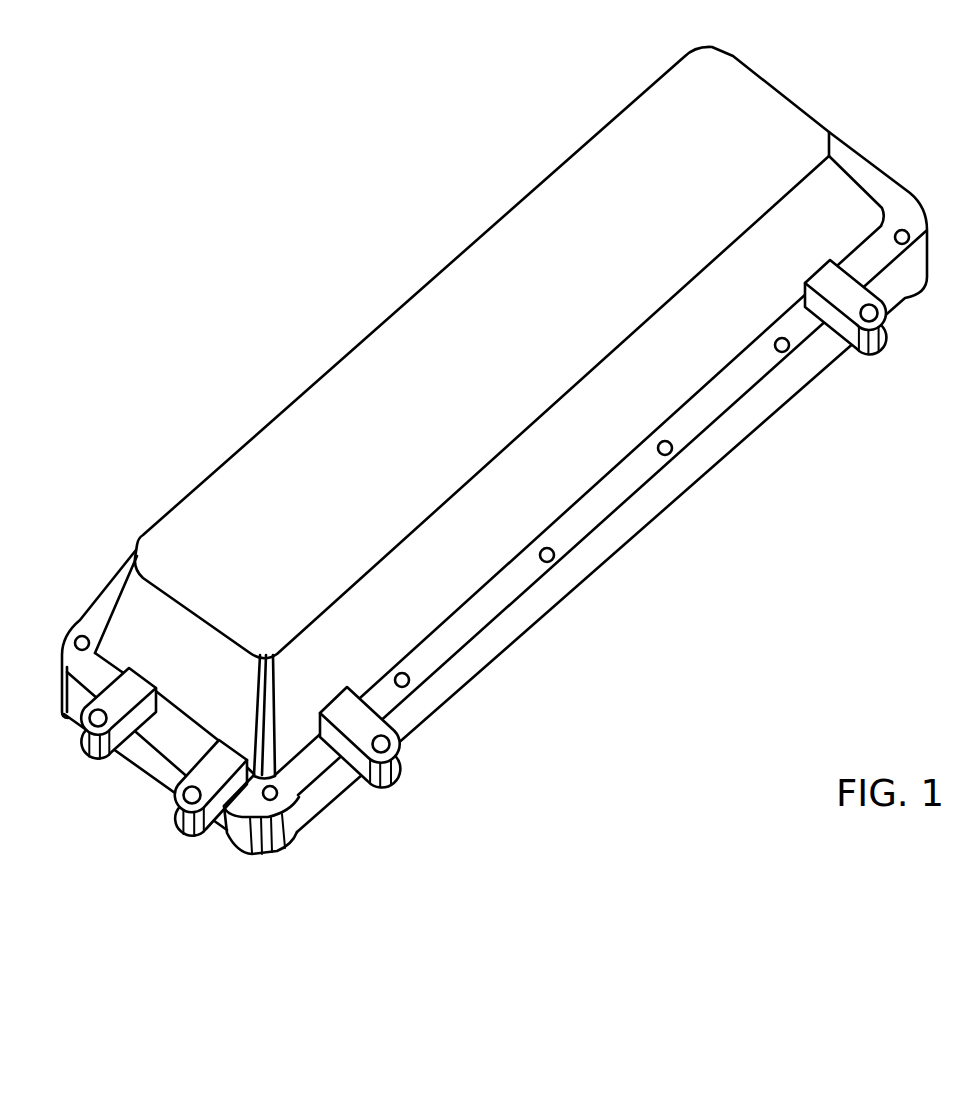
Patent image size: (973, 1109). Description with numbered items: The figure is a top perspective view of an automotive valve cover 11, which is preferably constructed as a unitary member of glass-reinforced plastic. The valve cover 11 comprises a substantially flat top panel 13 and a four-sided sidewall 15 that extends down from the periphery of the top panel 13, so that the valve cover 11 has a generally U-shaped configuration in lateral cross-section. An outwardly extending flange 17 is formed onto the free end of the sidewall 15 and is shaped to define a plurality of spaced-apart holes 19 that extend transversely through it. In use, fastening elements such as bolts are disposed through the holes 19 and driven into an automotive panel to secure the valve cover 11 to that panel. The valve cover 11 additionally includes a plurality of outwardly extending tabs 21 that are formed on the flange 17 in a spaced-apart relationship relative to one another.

The automotive valve cover 11 is at (620, 748).
The top panel 13 is at (424, 418).
The sidewall 15 is at (470, 521).
The flange 17 is at (625, 527).
The holes 19 is at (791, 350).
The tabs 21 is at (886, 345).